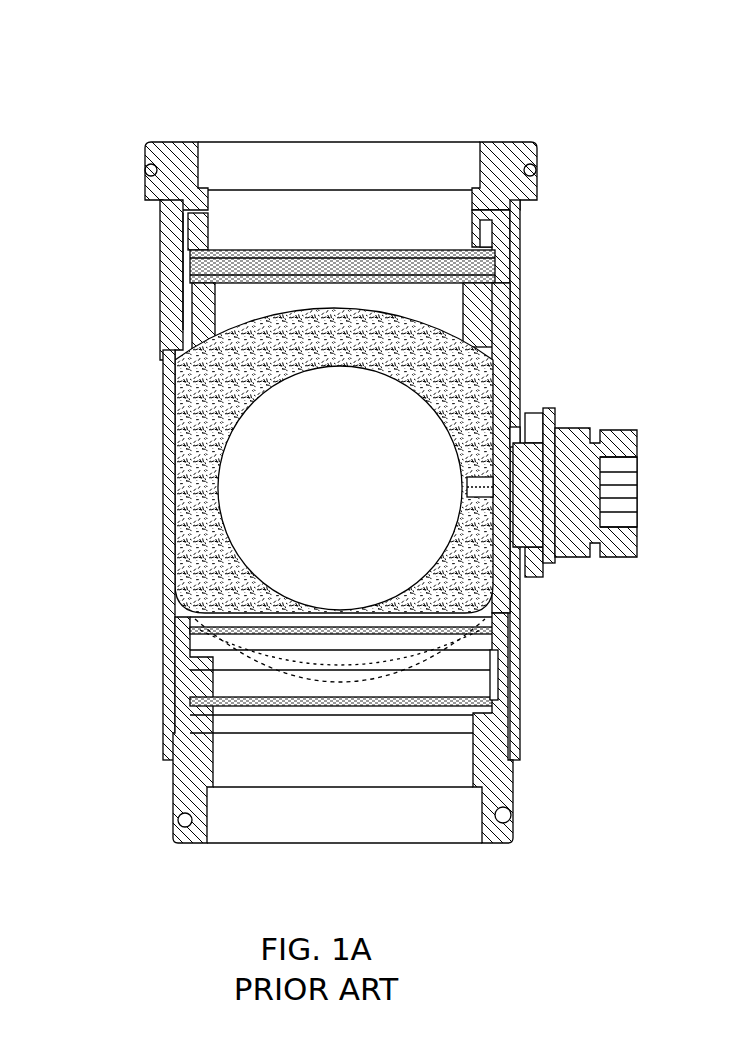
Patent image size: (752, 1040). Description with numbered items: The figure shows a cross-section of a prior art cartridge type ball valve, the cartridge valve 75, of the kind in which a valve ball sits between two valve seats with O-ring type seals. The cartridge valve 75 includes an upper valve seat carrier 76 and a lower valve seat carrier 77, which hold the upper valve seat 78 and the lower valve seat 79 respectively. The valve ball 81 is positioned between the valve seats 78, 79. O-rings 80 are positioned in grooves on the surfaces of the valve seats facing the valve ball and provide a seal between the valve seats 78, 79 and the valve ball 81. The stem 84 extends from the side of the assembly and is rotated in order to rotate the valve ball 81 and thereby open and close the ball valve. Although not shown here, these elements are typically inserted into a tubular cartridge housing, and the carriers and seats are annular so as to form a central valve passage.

The cartridge valve 75 is at (559, 75).
The upper valve seat carrier 76 is at (522, 258).
The lower valve seat carrier 77 is at (514, 783).
The upper valve seat 78 is at (522, 296).
The lower valve seat 79 is at (164, 698).
The O-rings 80 is at (521, 333).
The valve ball 81 is at (521, 378).
The stem 84 is at (579, 431).